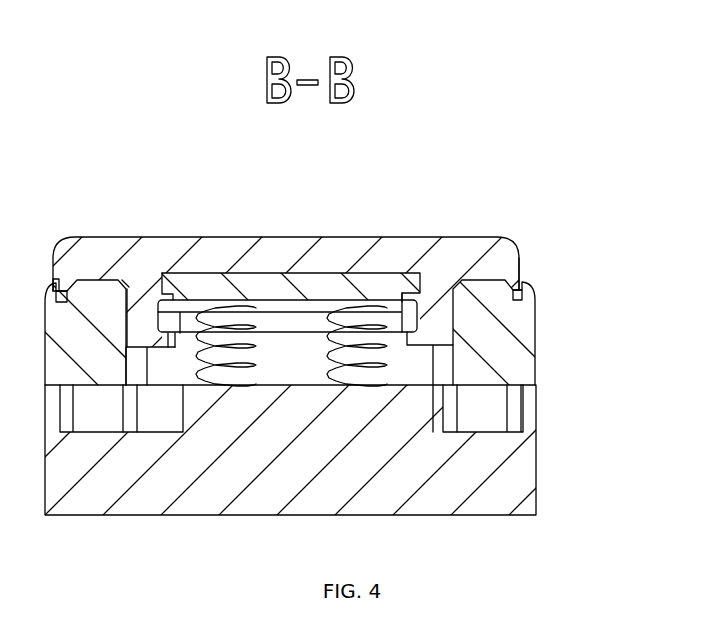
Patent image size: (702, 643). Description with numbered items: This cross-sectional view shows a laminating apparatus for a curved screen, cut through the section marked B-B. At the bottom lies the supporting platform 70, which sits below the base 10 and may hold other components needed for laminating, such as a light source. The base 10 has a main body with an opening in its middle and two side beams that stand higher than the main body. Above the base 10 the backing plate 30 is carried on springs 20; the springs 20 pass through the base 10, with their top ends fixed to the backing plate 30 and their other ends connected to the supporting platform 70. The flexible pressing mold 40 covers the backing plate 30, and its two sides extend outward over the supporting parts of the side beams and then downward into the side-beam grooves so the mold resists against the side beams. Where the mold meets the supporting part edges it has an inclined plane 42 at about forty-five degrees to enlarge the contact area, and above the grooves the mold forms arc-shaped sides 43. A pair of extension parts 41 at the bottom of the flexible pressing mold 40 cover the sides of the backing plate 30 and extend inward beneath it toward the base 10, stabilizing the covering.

The base 10 is at (520, 362).
The springs 20 is at (225, 278).
The backing plate 30 is at (318, 294).
The flexible pressing mold 40 is at (408, 250).
The extension parts 41 is at (140, 330).
The inclined plane 42 is at (120, 282).
The arc-shaped sides 43 is at (508, 262).
The supporting platform 70 is at (523, 486).